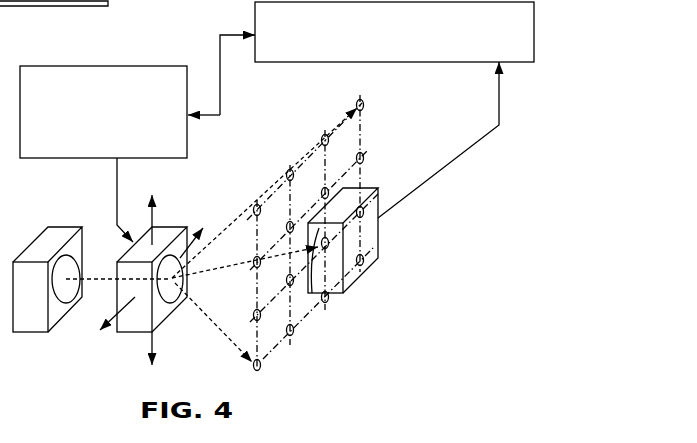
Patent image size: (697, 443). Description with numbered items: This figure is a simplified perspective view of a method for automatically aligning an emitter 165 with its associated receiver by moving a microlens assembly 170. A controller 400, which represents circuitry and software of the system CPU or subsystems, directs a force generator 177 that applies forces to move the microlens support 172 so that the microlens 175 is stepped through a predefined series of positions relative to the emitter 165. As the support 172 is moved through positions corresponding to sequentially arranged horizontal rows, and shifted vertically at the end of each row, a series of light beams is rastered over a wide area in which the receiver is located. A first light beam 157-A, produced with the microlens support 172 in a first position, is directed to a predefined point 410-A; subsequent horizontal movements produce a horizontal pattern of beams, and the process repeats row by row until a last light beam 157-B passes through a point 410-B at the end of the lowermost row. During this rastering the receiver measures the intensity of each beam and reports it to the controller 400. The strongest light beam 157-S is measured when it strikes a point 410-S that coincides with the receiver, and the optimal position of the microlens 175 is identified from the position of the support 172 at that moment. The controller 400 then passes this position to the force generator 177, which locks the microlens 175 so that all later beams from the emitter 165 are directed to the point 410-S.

The controller 400 is at (499, 44).
The force generator 177 is at (122, 151).
The emitter 165 is at (82, 258).
The microlens assembly 170 is at (135, 352).
The microlens support 172 is at (125, 332).
The microlens 175 is at (172, 252).
The first light beam 157-A is at (243, 213).
The strongest light beam 157-S is at (237, 268).
The last light beam 157-B is at (210, 322).
The predefined point 410-A is at (366, 104).
The point coinciding with receiver 410-S is at (330, 243).
The point at end of last row 410-B is at (259, 371).